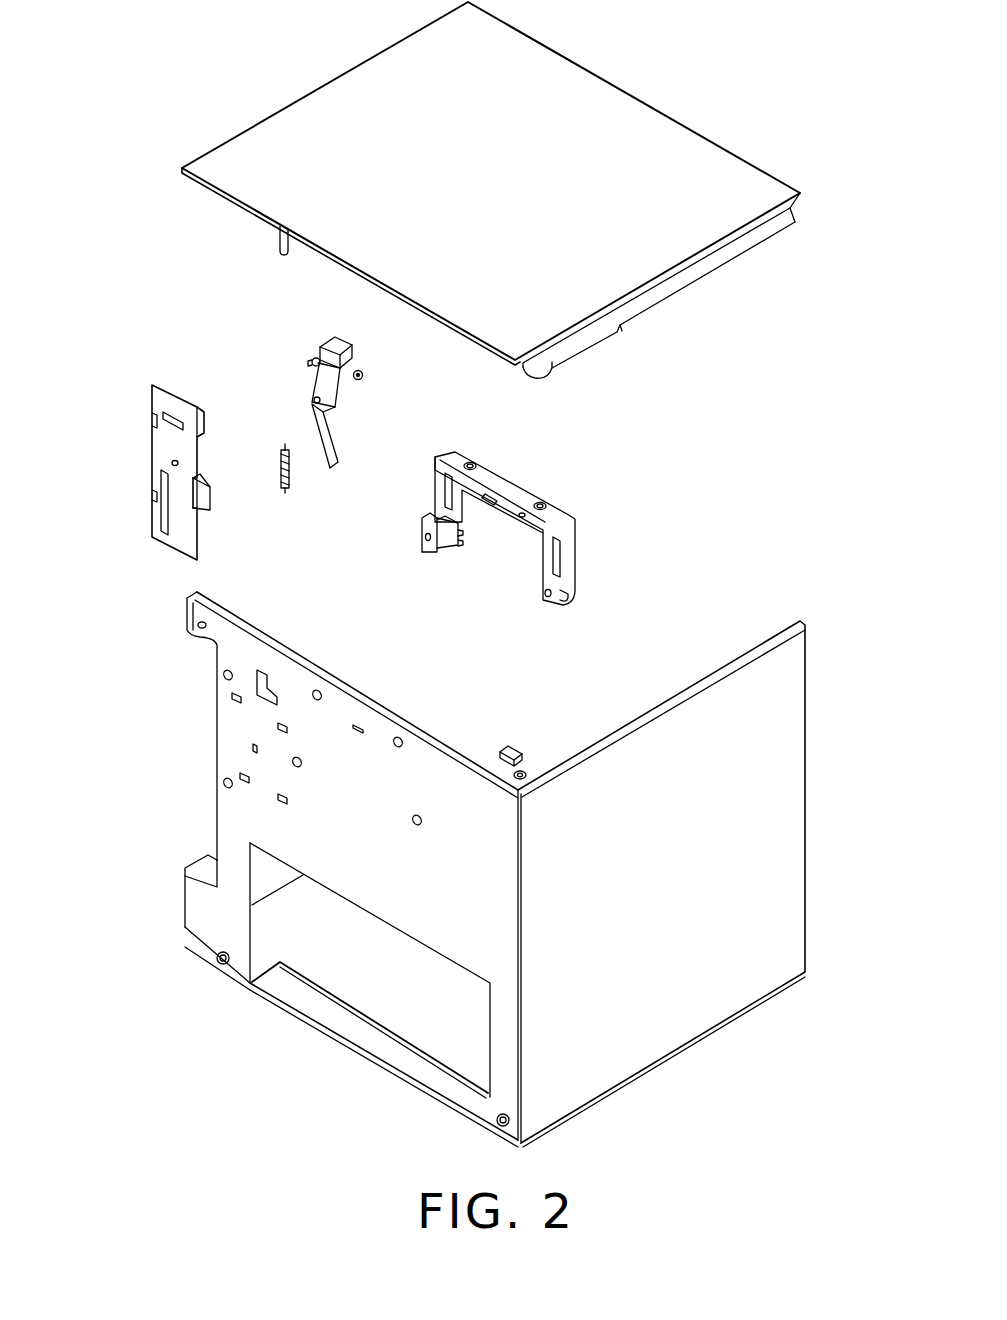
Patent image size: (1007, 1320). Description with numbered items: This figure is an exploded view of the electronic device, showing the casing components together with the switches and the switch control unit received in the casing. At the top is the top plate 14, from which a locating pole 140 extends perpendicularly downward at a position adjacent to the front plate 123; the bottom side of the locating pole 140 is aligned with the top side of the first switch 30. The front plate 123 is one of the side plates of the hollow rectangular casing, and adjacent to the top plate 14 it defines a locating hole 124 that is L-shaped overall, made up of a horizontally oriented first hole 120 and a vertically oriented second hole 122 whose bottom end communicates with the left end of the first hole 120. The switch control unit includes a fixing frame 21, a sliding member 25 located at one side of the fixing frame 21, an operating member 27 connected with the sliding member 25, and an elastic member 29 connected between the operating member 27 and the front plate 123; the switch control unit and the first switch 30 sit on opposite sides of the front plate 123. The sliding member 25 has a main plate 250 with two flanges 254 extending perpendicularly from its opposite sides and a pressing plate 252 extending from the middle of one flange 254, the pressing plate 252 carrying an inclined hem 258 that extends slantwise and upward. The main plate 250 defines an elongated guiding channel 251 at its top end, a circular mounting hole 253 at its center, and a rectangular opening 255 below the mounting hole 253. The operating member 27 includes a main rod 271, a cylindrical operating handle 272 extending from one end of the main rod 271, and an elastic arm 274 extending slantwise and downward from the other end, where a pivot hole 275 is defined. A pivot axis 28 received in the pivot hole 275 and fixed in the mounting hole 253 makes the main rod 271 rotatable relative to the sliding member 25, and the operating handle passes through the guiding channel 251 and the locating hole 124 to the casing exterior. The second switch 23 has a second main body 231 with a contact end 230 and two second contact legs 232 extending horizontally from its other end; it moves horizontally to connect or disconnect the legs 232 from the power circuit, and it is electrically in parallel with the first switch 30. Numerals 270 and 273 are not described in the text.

The top plate 14 is at (608, 155).
The locating pole 140 is at (278, 235).
The operating member 27 is at (288, 296).
The latch body 270 is at (345, 356).
The main rod 271 is at (320, 380).
The operating handle 272 is at (312, 360).
The latch head 273 is at (328, 345).
The elastic arm 274 is at (333, 434).
The pivot hole 275 is at (313, 401).
The pivot axis 28 is at (364, 374).
The elastic member 29 is at (291, 480).
The sliding member 25 is at (141, 392).
The main plate 250 is at (163, 437).
The guiding channel 251 is at (175, 415).
The pressing plate 252 is at (208, 498).
The mounting hole 253 is at (171, 463).
The flanges 254 is at (197, 540).
The opening 255 is at (163, 510).
The inclined hem 258 is at (200, 477).
The fixing frame 21 is at (502, 487).
The second switch 23 is at (424, 532).
The contact end 230 is at (418, 518).
The second main body 231 is at (422, 532).
The second contact legs 232 is at (458, 544).
The first hole 120 is at (459, 869).
The second hole 122 is at (257, 670).
The front plate 123 is at (237, 808).
The locating hole 124 is at (525, 770).
The first switch 30 is at (505, 750).